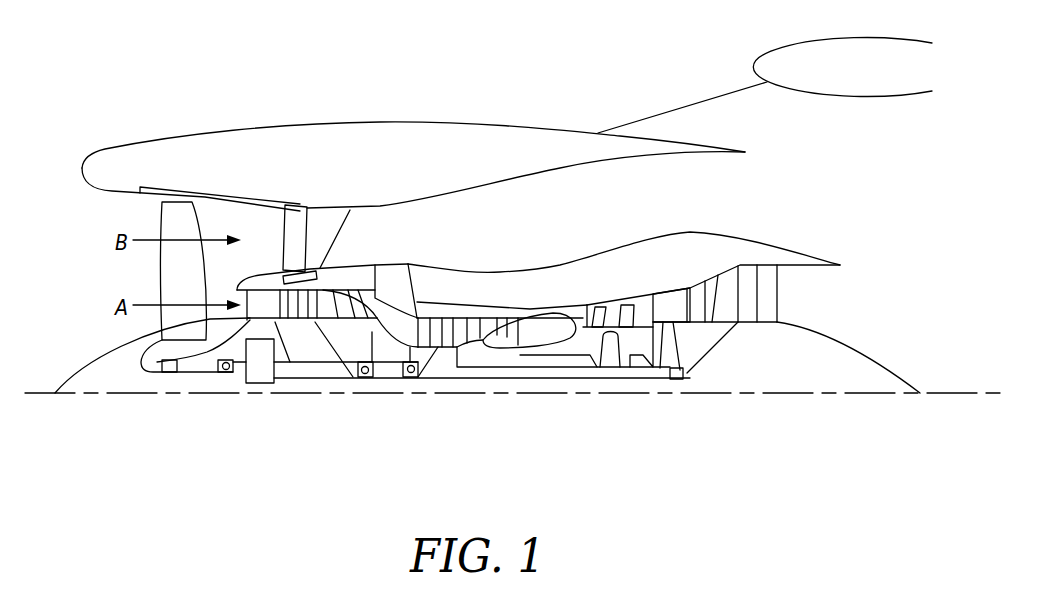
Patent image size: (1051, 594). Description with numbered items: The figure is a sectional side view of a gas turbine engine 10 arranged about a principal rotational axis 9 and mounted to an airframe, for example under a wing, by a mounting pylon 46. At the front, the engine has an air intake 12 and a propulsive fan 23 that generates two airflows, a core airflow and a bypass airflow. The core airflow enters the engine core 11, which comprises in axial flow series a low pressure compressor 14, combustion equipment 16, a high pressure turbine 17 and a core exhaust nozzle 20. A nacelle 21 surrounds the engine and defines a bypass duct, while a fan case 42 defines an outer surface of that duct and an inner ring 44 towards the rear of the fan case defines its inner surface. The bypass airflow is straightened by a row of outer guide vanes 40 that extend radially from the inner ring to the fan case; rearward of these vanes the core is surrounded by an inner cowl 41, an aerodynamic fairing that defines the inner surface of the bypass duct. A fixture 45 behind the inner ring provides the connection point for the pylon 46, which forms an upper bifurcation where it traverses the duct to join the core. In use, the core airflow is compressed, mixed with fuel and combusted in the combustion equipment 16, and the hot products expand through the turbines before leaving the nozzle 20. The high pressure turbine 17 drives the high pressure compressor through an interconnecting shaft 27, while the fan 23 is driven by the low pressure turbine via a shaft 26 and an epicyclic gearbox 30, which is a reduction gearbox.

The gas turbine engine 10 is at (160, 140).
The air intake 12 is at (112, 216).
The propulsive fan 23 is at (162, 272).
The fan case 42 is at (207, 197).
The outer guide vanes 40 is at (298, 227).
The low pressure compressor 14 is at (327, 297).
The nacelle 21 is at (387, 138).
The inner cowl 41 is at (570, 258).
The high pressure turbine 17 is at (613, 312).
The mounting pylon 46 is at (702, 106).
The engine core 11 is at (506, 283).
The core exhaust nozzle 20 is at (803, 297).
The principal rotational axis 9 is at (783, 395).
The epicyclic gearbox 30 is at (258, 370).
The inner ring 44 is at (285, 282).
The fixture 45 is at (293, 290).
The shaft 26 is at (467, 378).
The interconnecting shaft 27 is at (507, 368).
The combustion equipment 16 is at (548, 332).